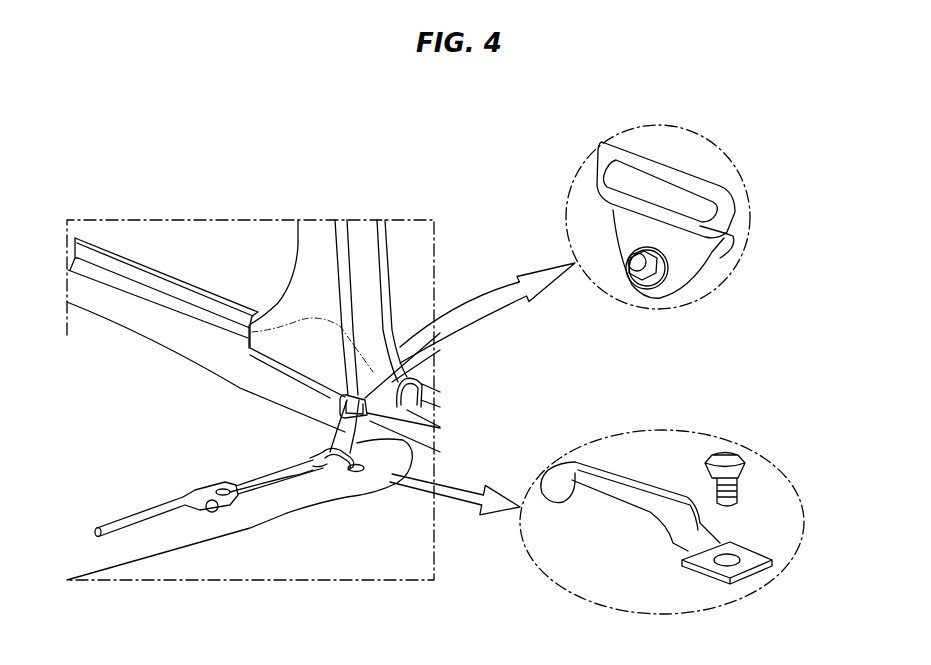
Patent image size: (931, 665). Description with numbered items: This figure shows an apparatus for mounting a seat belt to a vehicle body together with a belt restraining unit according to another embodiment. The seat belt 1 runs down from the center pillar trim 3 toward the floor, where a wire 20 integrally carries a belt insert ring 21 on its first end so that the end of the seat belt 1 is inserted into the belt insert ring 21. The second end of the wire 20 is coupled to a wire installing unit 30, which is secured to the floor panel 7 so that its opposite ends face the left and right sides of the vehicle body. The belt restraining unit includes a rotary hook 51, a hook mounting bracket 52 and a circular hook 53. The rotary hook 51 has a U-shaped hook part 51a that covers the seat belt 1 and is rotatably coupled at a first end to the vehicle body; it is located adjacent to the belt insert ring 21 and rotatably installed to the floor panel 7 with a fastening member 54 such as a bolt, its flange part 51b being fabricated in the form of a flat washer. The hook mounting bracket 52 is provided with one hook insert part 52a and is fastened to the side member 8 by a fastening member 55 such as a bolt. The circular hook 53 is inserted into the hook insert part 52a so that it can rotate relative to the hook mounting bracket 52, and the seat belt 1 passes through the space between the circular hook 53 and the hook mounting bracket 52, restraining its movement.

The seat belt 1 is at (347, 243).
The center pillar trim 3 is at (303, 245).
The floor panel 7 is at (195, 538).
The side member 8 is at (137, 293).
The wire 20 is at (270, 477).
The belt insert ring 21 is at (323, 470).
The wire installing unit 30 is at (150, 525).
The rotary hook 51 is at (358, 446).
The hook part 51a is at (625, 487).
The flange part 51b is at (762, 541).
The hook mounting bracket 52 is at (340, 412).
The hook insert part 52a is at (665, 205).
The circular hook 53 is at (642, 152).
The fastening member 54 is at (365, 470).
The fastening member 55 is at (638, 272).